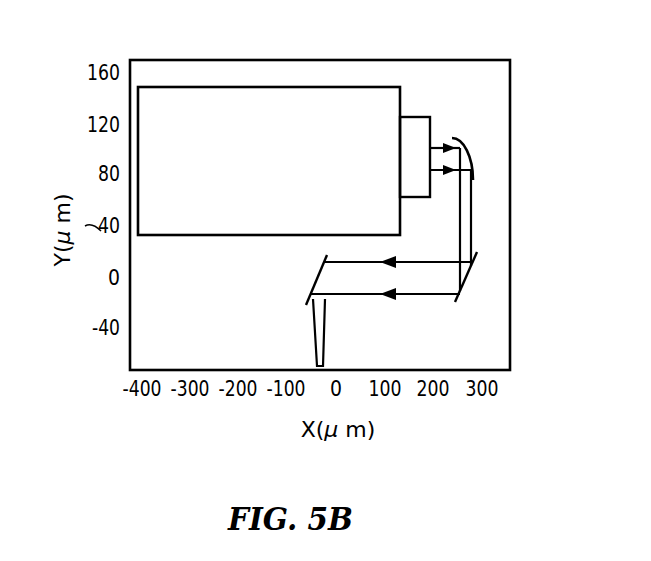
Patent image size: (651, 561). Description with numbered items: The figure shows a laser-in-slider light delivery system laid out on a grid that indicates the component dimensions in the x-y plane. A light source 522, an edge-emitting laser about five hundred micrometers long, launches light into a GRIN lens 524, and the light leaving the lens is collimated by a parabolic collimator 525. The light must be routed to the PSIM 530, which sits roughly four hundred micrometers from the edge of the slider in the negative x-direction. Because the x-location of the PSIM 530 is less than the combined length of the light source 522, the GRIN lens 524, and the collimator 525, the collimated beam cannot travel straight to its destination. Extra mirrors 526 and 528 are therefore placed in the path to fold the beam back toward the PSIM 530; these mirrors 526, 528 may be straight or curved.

The light source 522 is at (157, 87).
The GRIN lens 524 is at (415, 117).
The parabolic collimator 525 is at (468, 153).
The mirror 526 is at (477, 254).
The mirror 528 is at (315, 280).
The PSIM 530 is at (325, 318).